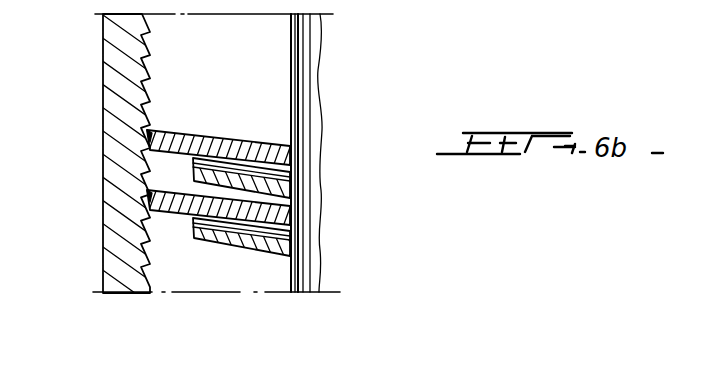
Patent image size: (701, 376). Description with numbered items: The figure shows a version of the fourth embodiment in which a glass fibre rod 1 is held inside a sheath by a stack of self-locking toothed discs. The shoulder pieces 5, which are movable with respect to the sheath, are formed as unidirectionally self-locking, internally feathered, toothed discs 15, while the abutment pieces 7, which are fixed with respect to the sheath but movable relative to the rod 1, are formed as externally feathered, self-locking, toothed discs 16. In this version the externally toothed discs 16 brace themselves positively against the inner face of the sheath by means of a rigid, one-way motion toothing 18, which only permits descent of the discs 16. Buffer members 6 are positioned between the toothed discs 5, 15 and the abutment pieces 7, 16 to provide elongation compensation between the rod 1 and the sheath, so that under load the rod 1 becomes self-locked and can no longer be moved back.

The rod 1 is at (310, 70).
The shoulder piece 5 is at (295, 212).
The internally feathered toothed disc 15 is at (286, 168).
The buffer member 6 is at (250, 228).
The abutment piece 7 is at (275, 166).
The externally feathered toothed disc 16 is at (283, 148).
The one way motion toothing 18 is at (147, 172).